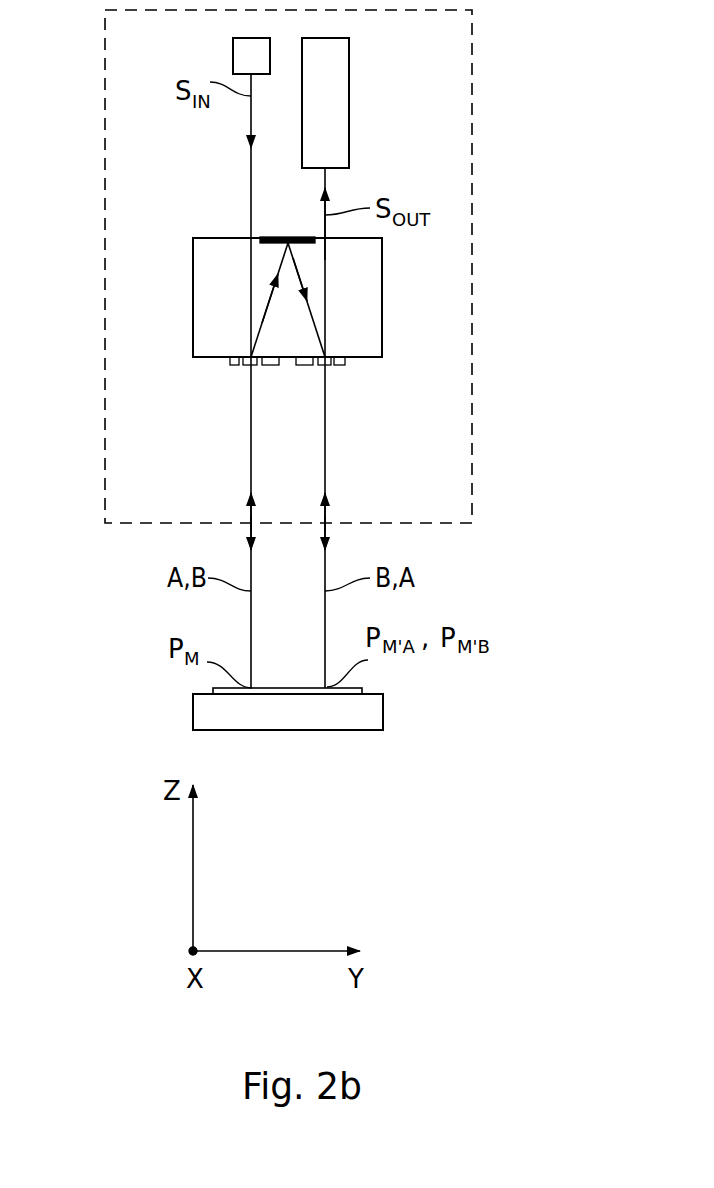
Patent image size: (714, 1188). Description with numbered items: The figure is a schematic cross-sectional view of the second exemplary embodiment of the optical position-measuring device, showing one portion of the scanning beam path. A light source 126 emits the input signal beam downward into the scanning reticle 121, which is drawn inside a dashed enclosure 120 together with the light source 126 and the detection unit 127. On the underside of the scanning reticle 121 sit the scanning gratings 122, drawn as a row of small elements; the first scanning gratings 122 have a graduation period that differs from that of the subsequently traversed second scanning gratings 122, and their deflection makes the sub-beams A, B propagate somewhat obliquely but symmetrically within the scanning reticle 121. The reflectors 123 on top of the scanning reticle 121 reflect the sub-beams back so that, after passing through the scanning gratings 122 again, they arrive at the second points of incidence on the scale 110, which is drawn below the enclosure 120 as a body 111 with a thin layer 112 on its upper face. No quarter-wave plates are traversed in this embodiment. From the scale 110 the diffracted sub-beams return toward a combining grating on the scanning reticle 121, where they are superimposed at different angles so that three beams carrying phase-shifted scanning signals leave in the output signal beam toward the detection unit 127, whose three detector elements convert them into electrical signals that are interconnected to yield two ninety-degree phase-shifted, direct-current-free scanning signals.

The scale 110 is at (269, 722).
The substrate 111 is at (383, 715).
The layer on substrate 112 is at (362, 690).
The measurement unit 120 is at (472, 99).
The scanning reticle 121 is at (382, 268).
The scanning gratings 122 is at (405, 423).
The reflectors 123 is at (288, 237).
The light source 126 is at (233, 52).
The detection unit 127 is at (349, 66).